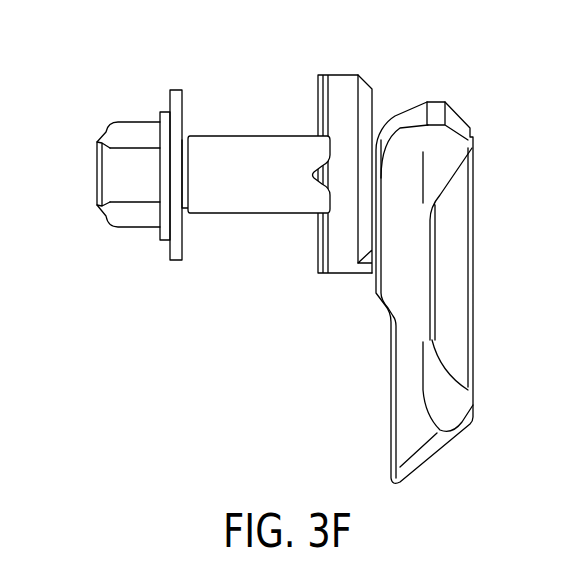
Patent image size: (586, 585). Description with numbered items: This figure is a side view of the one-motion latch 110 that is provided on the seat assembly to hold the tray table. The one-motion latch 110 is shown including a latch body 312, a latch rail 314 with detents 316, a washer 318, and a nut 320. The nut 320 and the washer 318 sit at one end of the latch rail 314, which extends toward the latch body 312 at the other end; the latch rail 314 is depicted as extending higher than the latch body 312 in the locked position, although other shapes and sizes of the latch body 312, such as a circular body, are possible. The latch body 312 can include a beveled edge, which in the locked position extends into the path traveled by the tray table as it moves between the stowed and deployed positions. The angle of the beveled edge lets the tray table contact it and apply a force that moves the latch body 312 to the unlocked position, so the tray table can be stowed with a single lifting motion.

The one-motion latch 110 is at (121, 80).
The latch body 312 is at (460, 113).
The latch rail 314 is at (366, 90).
The detents 316 is at (318, 91).
The washer 318 is at (175, 261).
The nut 320 is at (118, 223).